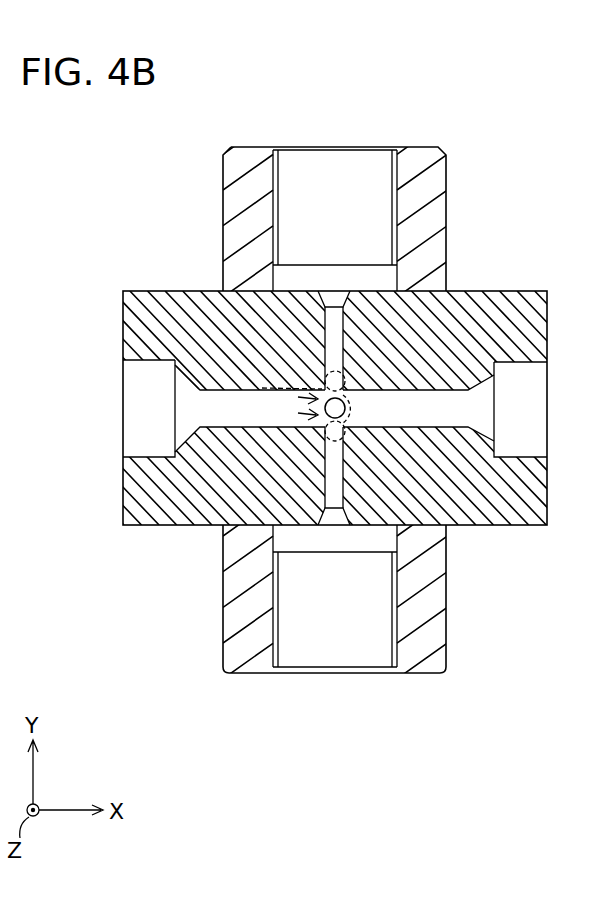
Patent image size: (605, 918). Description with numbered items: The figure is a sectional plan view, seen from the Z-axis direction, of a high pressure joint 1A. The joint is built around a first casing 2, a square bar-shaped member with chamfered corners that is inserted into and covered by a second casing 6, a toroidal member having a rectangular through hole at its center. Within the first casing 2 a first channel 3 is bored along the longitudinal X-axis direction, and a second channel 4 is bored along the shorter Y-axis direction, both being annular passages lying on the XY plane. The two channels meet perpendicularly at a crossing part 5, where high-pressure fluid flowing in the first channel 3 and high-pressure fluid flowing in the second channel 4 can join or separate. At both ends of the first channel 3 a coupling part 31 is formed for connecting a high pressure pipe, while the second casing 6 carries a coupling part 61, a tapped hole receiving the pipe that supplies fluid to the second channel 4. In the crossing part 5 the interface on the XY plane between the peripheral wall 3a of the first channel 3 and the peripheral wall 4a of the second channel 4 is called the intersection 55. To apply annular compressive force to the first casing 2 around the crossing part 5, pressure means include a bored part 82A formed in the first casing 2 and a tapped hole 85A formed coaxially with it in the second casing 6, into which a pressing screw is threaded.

The high pressure joint 1A is at (514, 77).
The first casing 2 is at (470, 291).
The first channel 3 is at (230, 413).
The peripheral wall of the first channel 3a is at (198, 400).
The coupling part 31 is at (146, 360).
The second channel 4 is at (343, 332).
The peripheral wall of the second channel 4a is at (337, 303).
The crossing part 5 is at (330, 427).
The intersection 55 is at (326, 376).
The second casing 6 is at (224, 181).
The coupling part 61 is at (288, 178).
The bored part 82A is at (211, 317).
The tapped hole 85A is at (312, 389).